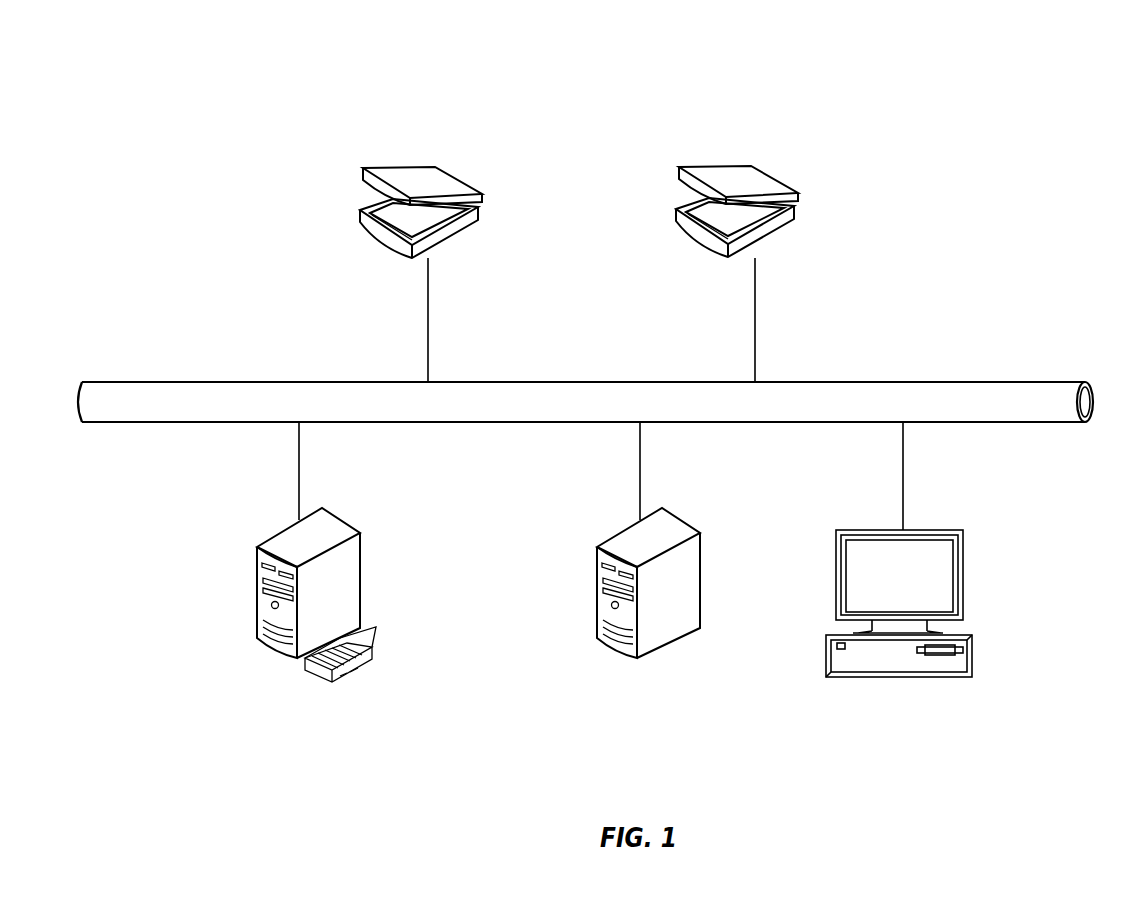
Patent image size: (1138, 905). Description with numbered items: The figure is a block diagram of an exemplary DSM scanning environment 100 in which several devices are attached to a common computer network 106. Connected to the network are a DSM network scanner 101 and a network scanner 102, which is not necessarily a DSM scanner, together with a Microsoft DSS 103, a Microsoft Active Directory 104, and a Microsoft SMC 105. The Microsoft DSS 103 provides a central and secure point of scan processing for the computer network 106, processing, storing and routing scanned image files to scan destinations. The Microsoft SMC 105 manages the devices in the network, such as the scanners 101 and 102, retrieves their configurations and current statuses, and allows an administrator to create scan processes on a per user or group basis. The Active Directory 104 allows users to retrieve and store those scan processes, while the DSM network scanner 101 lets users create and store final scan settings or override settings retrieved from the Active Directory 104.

The DSM scanning environment 100 is at (1002, 93).
The DSM network scanner 101 is at (443, 186).
The network scanner 102 is at (770, 188).
The Microsoft DSS 103 is at (355, 562).
The Microsoft Active Directory 104 is at (680, 532).
The Microsoft SMC 105 is at (972, 648).
The computer network 106 is at (987, 380).